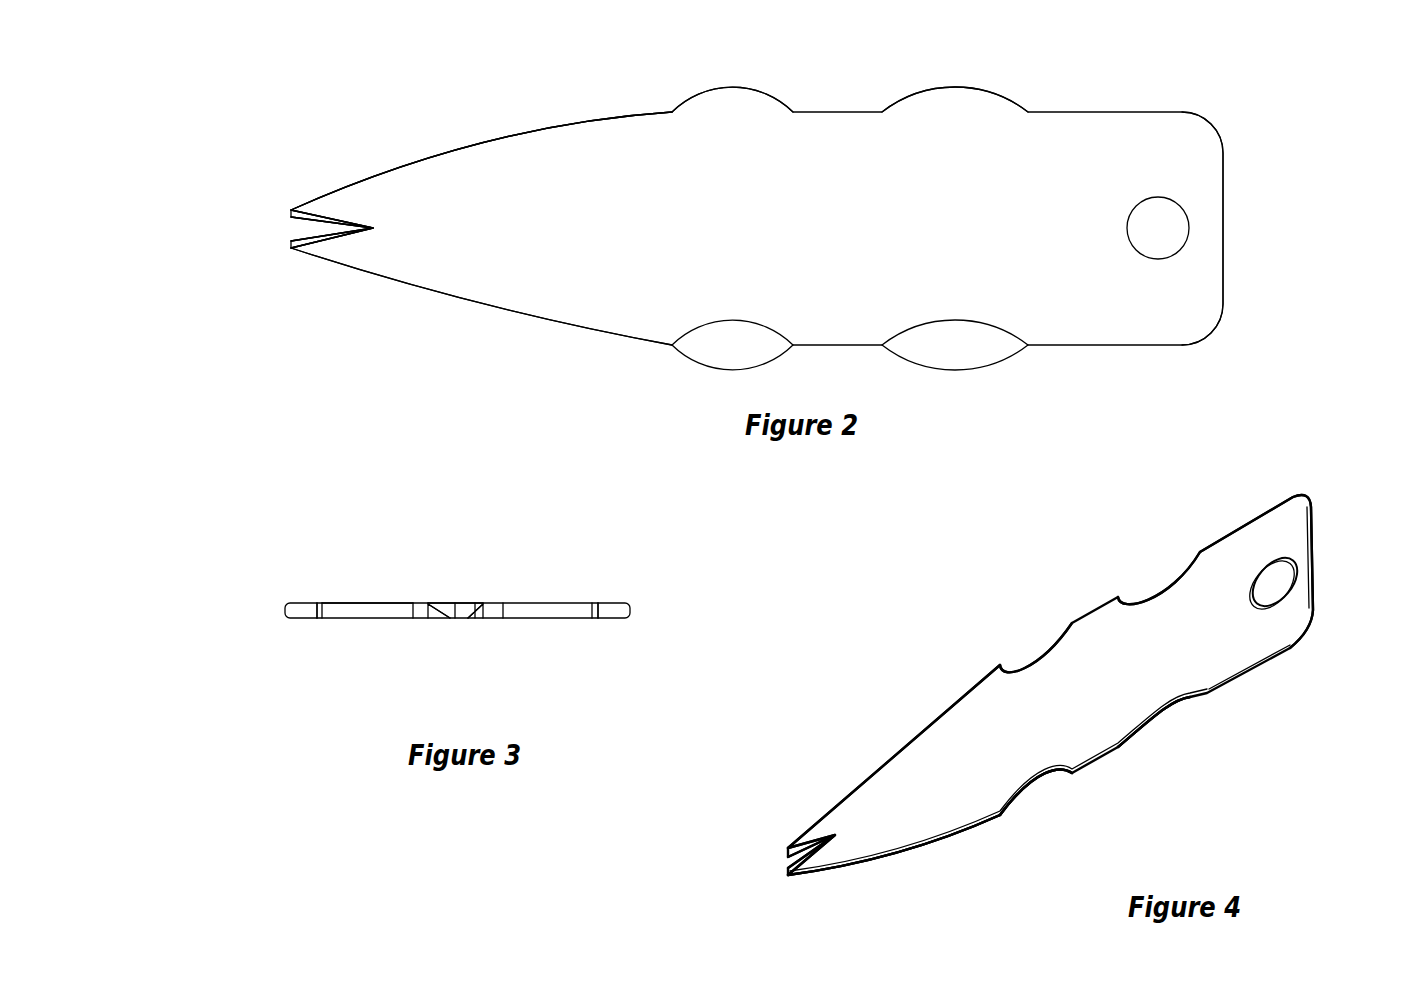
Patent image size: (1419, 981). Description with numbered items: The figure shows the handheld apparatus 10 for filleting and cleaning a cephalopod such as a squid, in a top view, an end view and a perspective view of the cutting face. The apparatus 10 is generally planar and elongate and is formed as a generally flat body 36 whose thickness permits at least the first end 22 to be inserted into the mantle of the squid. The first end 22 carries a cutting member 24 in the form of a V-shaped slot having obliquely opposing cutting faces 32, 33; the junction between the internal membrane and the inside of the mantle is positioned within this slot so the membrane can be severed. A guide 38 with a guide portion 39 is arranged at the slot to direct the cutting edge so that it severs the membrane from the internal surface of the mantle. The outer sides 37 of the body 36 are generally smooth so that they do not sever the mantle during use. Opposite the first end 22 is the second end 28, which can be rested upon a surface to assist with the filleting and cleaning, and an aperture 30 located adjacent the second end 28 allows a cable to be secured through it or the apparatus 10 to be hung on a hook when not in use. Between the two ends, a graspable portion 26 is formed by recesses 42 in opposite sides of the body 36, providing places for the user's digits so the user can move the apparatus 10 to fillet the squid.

In FIG. 2, the handheld apparatus 10 is at (1300, 118).
In FIG. 3, the handheld apparatus 10 is at (242, 527).
In FIG. 4, the handheld apparatus 10 is at (945, 595).
In FIG. 2, the first end 22 is at (432, 335).
In FIG. 4, the first end 22 is at (837, 773).
In FIG. 2, the cutting member 24 is at (283, 232).
In FIG. 3, the cutting member 24 is at (460, 623).
In FIG. 4, the cutting member 24 is at (777, 868).
In FIG. 2, the graspable portion 26 is at (1025, 89).
In FIG. 3, the graspable portion 26 is at (638, 611).
In FIG. 4, the graspable portion 26 is at (1195, 537).
In FIG. 2, the second end 28 is at (1230, 266).
In FIG. 4, the second end 28 is at (1325, 575).
In FIG. 2, the aperture 30 is at (1157, 261).
In FIG. 4, the aperture 30 is at (1268, 607).
In FIG. 2, the cutting face 32 is at (311, 222).
In FIG. 3, the cutting face 32 is at (442, 606).
In FIG. 2, the cutting face 33 is at (318, 257).
In FIG. 3, the cutting face 33 is at (473, 606).
In FIG. 2, the body 36 is at (862, 238).
In FIG. 3, the body 36 is at (363, 606).
In FIG. 4, the body 36 is at (1112, 676).
In FIG. 2, the outer sides 37 is at (468, 148).
In FIG. 4, the outer sides 37 is at (903, 845).
In FIG. 2, the guide 38 is at (345, 208).
In FIG. 2, the guide portion 39 is at (342, 257).
In FIG. 4, the recesses 42 is at (1040, 783).